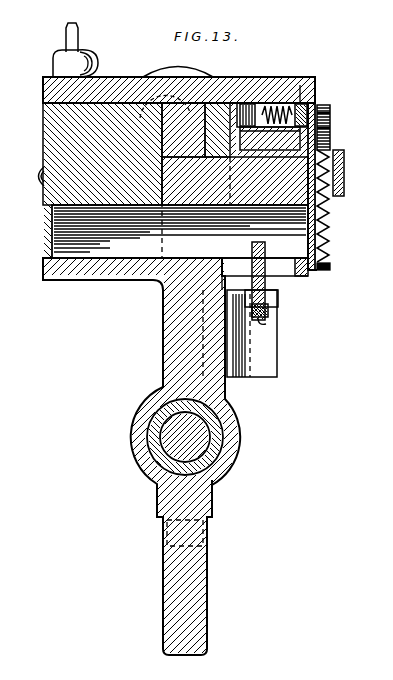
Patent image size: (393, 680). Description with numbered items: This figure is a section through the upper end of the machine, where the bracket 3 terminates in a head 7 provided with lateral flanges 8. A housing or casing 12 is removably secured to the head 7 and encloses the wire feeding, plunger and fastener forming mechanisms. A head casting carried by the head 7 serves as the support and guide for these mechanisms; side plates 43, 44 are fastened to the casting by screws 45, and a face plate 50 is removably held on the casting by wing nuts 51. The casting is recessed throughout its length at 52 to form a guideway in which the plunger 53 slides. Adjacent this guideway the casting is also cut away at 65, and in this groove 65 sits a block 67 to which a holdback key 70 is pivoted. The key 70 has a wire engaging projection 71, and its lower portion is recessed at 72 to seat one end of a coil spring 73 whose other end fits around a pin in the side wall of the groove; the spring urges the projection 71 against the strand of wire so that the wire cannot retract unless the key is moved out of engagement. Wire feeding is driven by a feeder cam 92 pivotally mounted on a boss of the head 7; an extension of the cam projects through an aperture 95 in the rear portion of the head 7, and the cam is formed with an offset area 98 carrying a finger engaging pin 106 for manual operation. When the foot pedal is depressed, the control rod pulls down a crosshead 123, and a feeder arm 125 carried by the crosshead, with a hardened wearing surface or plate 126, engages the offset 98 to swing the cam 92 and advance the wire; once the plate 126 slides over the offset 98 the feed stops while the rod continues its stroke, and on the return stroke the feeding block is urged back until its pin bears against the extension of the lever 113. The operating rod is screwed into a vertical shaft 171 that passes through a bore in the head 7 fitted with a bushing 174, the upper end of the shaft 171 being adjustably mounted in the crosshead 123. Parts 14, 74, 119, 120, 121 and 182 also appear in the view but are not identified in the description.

The bracket 3 is at (173, 580).
The head 7 is at (172, 338).
The lateral flanges 8 is at (71, 281).
The housing 12 is at (187, 339).
The member 14 is at (7, 617).
The side plate 43 is at (50, 229).
The side plate 44 is at (318, 273).
The screws 45 is at (36, 177).
The face plate 50 is at (43, 88).
The wing nuts 51 is at (53, 61).
The recess 52 is at (146, 113).
The plunger 53 is at (206, 98).
The groove 65 is at (290, 152).
The block 67 is at (320, 131).
The holdback key 70 is at (263, 103).
The wire engaging projection 71 is at (247, 103).
The recess 72 is at (296, 103).
The coil spring 73 is at (318, 93).
The plug 74 is at (316, 105).
The feeder cam 92 is at (66, 132).
The aperture 95 is at (287, 263).
The offset area 98 is at (268, 323).
The finger engaging pin 106 is at (270, 316).
The lever 113 is at (344, 165).
The plate 119 is at (320, 117).
The ratchet 120 is at (327, 205).
The stack 121 is at (330, 142).
The crosshead 123 is at (208, 505).
The feeder arm 125 is at (270, 355).
The hardened wearing surface 126 is at (278, 298).
The vertical shaft 171 is at (178, 428).
The bushing 174 is at (150, 452).
The dome 182 is at (184, 66).